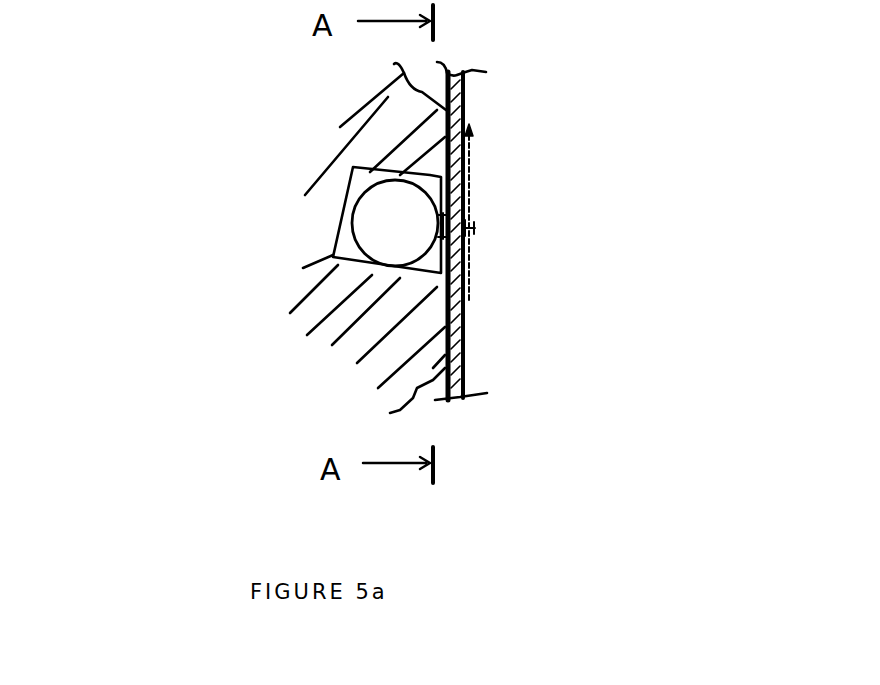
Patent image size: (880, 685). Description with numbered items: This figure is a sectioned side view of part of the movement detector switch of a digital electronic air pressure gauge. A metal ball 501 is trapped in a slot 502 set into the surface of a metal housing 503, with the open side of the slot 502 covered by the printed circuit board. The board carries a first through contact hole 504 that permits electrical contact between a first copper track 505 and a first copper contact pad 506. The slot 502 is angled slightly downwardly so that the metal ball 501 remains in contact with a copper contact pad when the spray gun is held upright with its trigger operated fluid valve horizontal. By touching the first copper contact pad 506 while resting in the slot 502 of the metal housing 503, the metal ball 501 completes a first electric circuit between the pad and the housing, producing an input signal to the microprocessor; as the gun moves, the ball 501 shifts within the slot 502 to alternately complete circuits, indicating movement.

The metal ball 501 is at (352, 219).
The slot 502 is at (352, 168).
The metal housing 503 is at (316, 367).
The first through contact hole 504 is at (473, 228).
The first copper track 505 is at (471, 157).
The first copper contact pad 506 is at (472, 250).